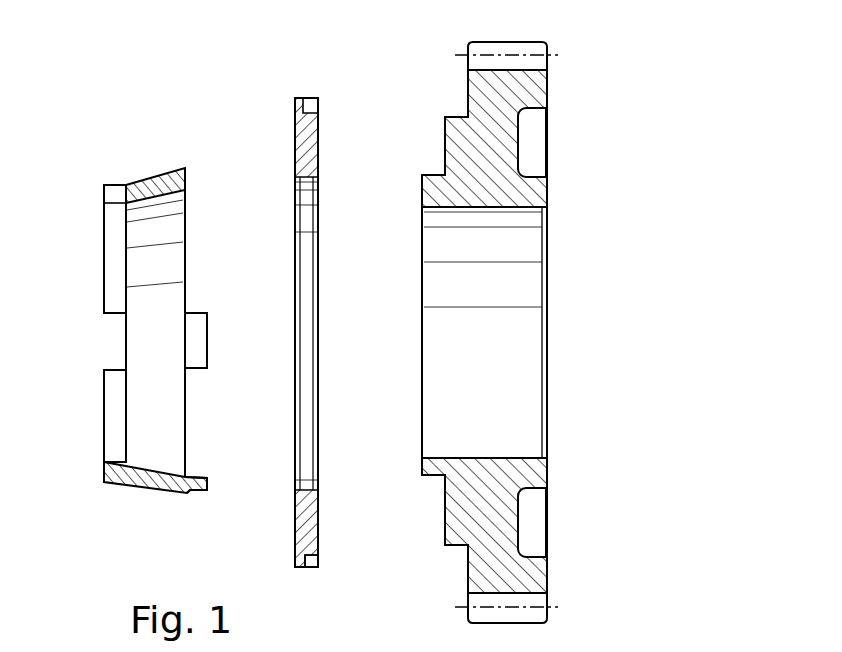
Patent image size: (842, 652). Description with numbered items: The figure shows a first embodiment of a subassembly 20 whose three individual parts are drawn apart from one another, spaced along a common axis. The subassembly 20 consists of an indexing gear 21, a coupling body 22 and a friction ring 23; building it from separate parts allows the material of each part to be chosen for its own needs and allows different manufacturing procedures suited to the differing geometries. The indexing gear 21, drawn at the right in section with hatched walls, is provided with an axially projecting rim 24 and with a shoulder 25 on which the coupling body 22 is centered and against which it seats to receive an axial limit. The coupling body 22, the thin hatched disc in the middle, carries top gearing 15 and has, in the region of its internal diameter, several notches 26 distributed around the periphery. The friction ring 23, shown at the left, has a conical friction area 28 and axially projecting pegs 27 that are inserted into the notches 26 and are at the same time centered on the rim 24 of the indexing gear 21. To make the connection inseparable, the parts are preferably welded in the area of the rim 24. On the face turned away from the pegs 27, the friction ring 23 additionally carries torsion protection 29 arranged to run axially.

The top gearing 15 is at (309, 568).
The subassembly 20 is at (268, 342).
The indexing gear 21 is at (491, 327).
The coupling body 22 is at (295, 152).
The friction ring 23 is at (148, 183).
The axially projecting rim 24 is at (445, 477).
The shoulder 25 is at (443, 142).
The notches 26 is at (302, 481).
The axially projecting pegs 27 is at (198, 493).
The conical friction area 28 is at (155, 488).
The torsion protection 29 is at (113, 436).